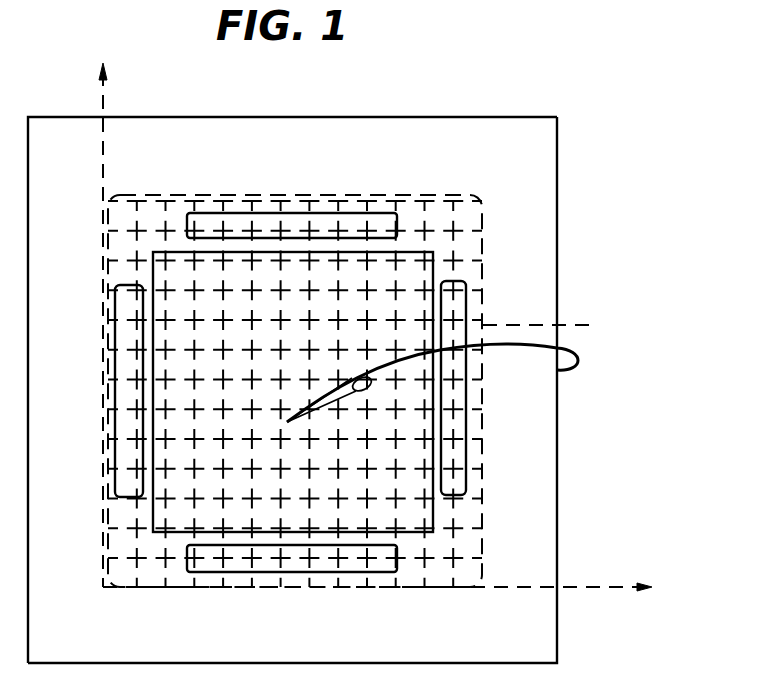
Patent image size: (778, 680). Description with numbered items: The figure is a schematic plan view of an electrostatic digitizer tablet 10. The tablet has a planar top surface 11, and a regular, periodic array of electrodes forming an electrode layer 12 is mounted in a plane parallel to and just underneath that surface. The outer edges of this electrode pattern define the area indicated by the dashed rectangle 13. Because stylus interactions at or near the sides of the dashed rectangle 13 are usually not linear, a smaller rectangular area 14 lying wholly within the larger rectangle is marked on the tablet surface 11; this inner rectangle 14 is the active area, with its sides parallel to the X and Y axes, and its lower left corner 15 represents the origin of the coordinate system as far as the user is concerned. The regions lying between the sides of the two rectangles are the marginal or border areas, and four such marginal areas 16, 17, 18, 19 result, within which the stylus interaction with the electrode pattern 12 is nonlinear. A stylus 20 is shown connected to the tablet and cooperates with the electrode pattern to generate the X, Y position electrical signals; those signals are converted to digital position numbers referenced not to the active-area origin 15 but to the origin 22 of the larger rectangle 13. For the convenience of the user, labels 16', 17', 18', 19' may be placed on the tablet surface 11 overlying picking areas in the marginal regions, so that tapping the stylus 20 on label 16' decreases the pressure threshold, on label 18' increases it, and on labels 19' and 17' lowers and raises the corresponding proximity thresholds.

The tablet 10 is at (523, 117).
The tablet top surface 11 is at (544, 274).
The electrode layer 12 is at (433, 194).
The dashed rectangle 13 is at (553, 328).
The smaller rectangular area 14 is at (433, 532).
The lower left corner 15 is at (132, 541).
The marginal area 16 is at (90, 394).
The label 16' is at (96, 391).
The marginal area 17 is at (295, 172).
The label 17' is at (292, 188).
The marginal area 18 is at (489, 394).
The label 18' is at (491, 400).
The marginal area 19 is at (319, 566).
The label 19' is at (292, 599).
The stylus 20 is at (370, 389).
The origin of the larger rectangle 22 is at (110, 592).